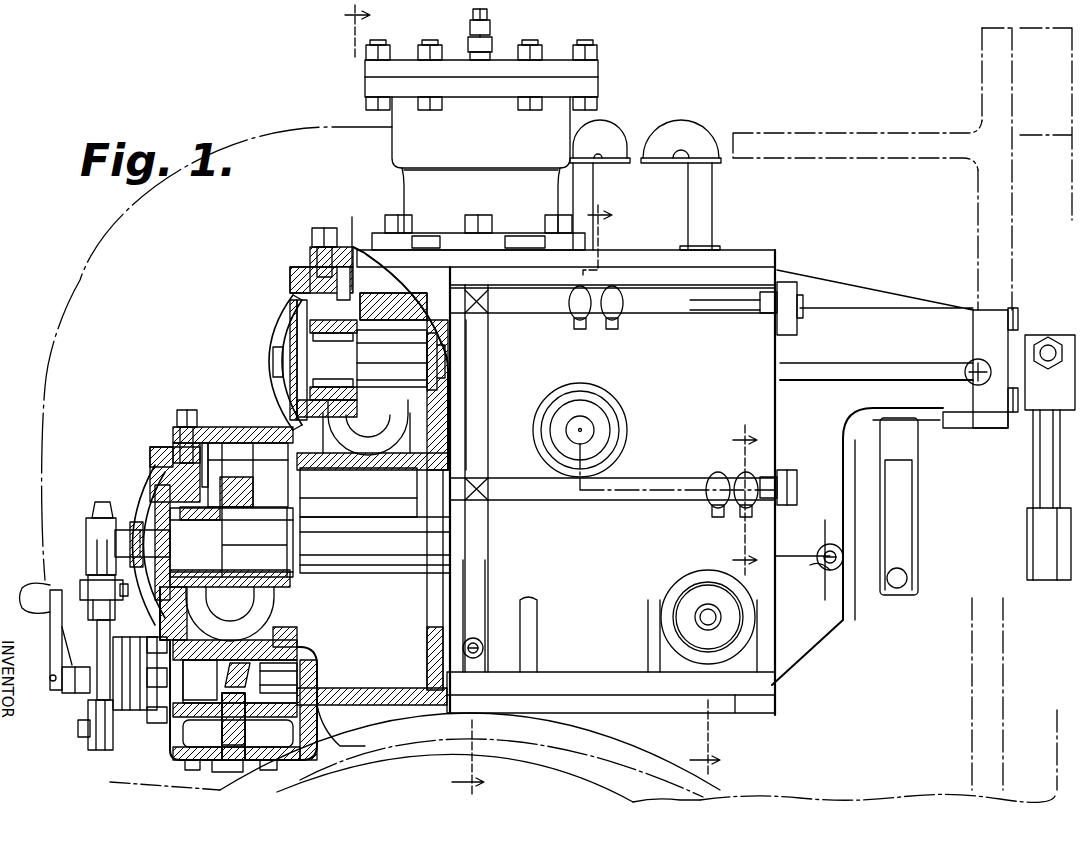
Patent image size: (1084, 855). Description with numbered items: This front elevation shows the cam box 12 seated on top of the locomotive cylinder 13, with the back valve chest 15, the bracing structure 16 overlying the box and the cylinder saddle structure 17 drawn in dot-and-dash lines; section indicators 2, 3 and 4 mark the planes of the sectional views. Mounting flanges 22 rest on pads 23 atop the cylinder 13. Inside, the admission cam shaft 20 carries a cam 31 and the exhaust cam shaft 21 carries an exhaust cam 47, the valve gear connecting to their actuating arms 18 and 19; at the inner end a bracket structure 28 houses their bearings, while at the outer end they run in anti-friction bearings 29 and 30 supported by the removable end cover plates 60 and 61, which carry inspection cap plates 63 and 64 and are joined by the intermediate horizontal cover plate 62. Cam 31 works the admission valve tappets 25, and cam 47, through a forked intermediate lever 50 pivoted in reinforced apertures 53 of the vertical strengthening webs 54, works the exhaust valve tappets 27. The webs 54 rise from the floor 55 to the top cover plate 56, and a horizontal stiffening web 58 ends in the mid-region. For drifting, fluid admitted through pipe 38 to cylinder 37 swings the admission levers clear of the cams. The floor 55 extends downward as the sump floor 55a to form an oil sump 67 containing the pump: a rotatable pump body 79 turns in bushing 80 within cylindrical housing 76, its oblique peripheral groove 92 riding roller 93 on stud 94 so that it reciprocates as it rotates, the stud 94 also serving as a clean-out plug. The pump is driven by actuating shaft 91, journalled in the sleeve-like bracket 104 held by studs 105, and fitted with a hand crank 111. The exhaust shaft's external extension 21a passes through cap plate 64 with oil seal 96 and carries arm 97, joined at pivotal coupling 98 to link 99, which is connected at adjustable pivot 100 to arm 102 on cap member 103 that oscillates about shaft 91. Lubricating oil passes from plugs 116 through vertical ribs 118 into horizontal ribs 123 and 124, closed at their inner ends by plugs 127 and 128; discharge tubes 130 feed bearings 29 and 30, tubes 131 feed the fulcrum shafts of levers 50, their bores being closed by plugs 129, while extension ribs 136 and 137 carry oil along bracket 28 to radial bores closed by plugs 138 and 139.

The section line 2- 2 is at (410, 403).
The section line 3- 3 is at (651, 486).
The section line 4- 4 is at (743, 497).
The cam box 12 is at (566, 482).
The locomotive cylinder 13 is at (590, 755).
The back valve chest 15 is at (217, 353).
The bracing structure 16 is at (772, 136).
The cylinder saddle structure 17 is at (1000, 215).
The actuating arm 18 is at (1033, 468).
The actuating arm 19 is at (905, 498).
The admission cam shaft 20 is at (401, 360).
The exhaust cam shaft 21 is at (375, 520).
The external extension 21a is at (110, 545).
The flanges 22 is at (611, 692).
The pads 23 is at (470, 755).
The valve tappets 25 is at (595, 430).
The exhaust valve tappets 27 is at (705, 608).
The bracket structure 28 is at (857, 546).
The anti-friction bearing 29 is at (318, 345).
The anti-friction bearing 30 is at (187, 520).
The cam 31 is at (385, 312).
The cylinder 37 is at (481, 145).
The pipe 38 is at (490, 14).
The exhaust cams 47 is at (238, 446).
The intermediate levers 50 is at (247, 492).
The reinforced apertures 53 is at (232, 470).
The vertical strengthening webs 54 is at (424, 640).
The floor 55 is at (398, 696).
The downward floor extension 55a is at (345, 770).
The top cover plate 56 is at (350, 232).
The horizontal stiffening web 58 is at (440, 448).
The outer end cover plate 60 is at (296, 266).
The outer end cover plate 61 is at (158, 462).
The intermediate horizontal cover plate 62 is at (280, 438).
The cap plate 63 is at (280, 325).
The cap plate 64 is at (144, 507).
The oil sump 67 is at (176, 738).
The cylindrical housing 76 is at (262, 628).
The pump body 79 is at (278, 677).
The cylindrical bushing 80 is at (292, 648).
The actuating shaft 91 is at (50, 678).
The peripheral groove 92 is at (240, 681).
The roller 93 is at (225, 733).
The stud 94 is at (246, 738).
The oil seal 96 is at (120, 522).
The arm 97 is at (92, 575).
The pivotal coupling 98 is at (80, 584).
The link 99 is at (111, 635).
The adjustable pivot 100 is at (80, 688).
The arm 102 is at (98, 750).
The cylindrical cap member 103 is at (88, 657).
The sleeve-like bracket 104 is at (150, 672).
The studs 105 is at (150, 698).
The hand crank 111 is at (53, 638).
The plugs 116 is at (478, 640).
The vertical ribs 118 is at (470, 547).
The rib 123 is at (522, 310).
The rib 124 is at (545, 504).
The plug 127 is at (797, 315).
The plug 128 is at (800, 490).
The plugs 129 is at (583, 330).
The discharge tubes 130 is at (290, 283).
The tubes 131 is at (228, 446).
The extension rib 136 is at (858, 370).
The extension rib 137 is at (800, 557).
The plug 138 is at (968, 365).
The plug 139 is at (822, 568).